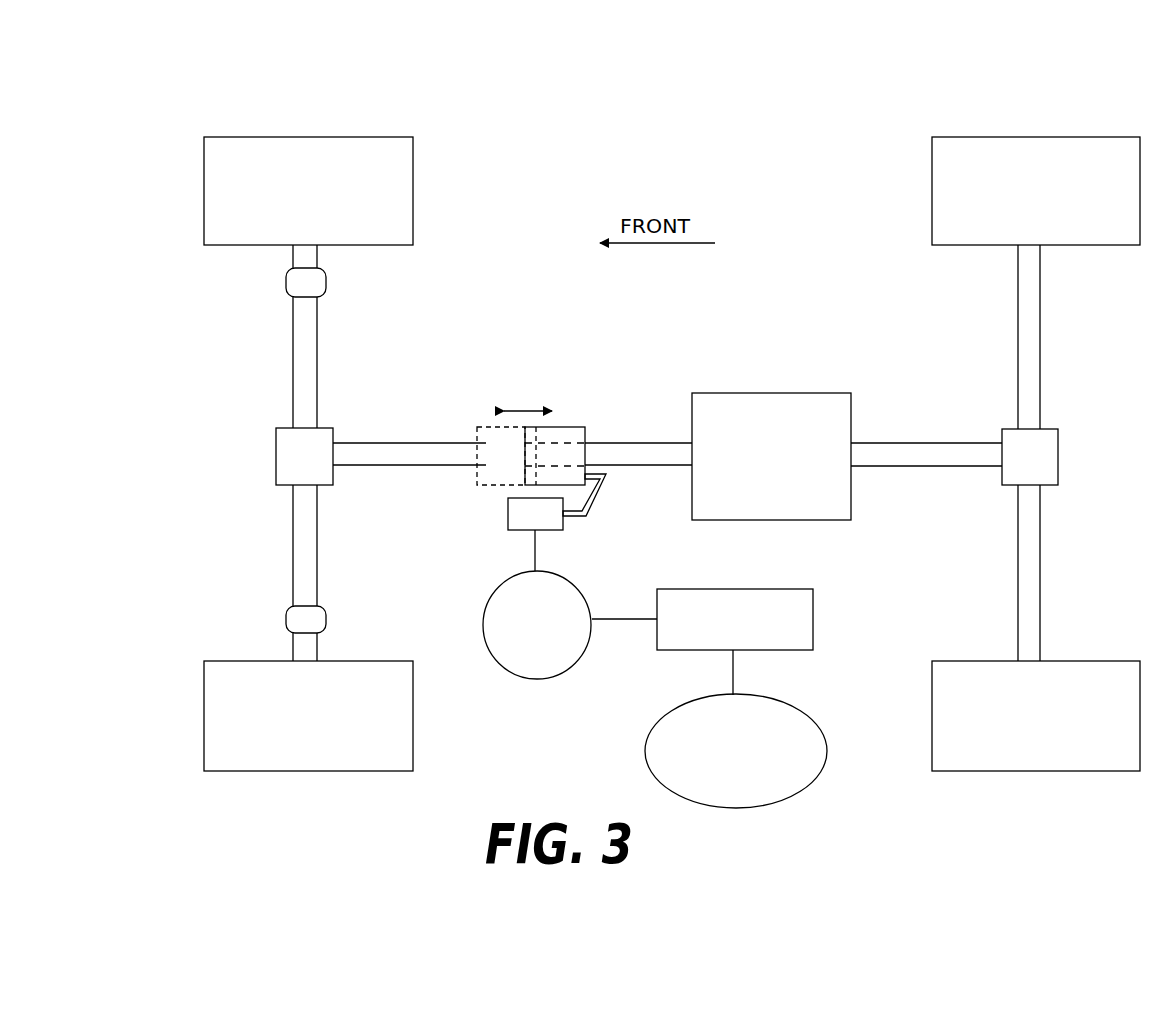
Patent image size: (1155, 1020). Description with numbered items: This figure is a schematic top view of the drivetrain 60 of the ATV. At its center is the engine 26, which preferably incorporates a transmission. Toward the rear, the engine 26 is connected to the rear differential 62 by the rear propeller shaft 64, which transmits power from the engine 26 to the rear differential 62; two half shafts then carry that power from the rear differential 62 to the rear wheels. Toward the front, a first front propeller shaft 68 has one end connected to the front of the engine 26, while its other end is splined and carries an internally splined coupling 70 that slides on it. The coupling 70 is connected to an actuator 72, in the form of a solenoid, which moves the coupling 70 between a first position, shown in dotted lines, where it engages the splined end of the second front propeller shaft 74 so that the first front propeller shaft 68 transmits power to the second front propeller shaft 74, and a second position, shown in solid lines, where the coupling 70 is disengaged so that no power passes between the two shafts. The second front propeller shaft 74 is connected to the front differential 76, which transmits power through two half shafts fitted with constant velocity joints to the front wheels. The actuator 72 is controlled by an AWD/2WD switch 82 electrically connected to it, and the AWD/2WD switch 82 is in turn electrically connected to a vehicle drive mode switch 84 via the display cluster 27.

The engine 26 is at (760, 393).
The display cluster 27 is at (813, 617).
The drivetrain 60 is at (780, 203).
The rear differential 62 is at (1058, 462).
The rear propeller shaft 64 is at (933, 443).
The first front propeller shaft 68 is at (637, 443).
The coupling 70 is at (570, 427).
The actuator 72 is at (508, 512).
The second front propeller shaft 74 is at (413, 443).
The front differential 76 is at (276, 455).
The AWD/2WD switch 82 is at (557, 678).
The vehicle drive mode switch 84 is at (817, 783).